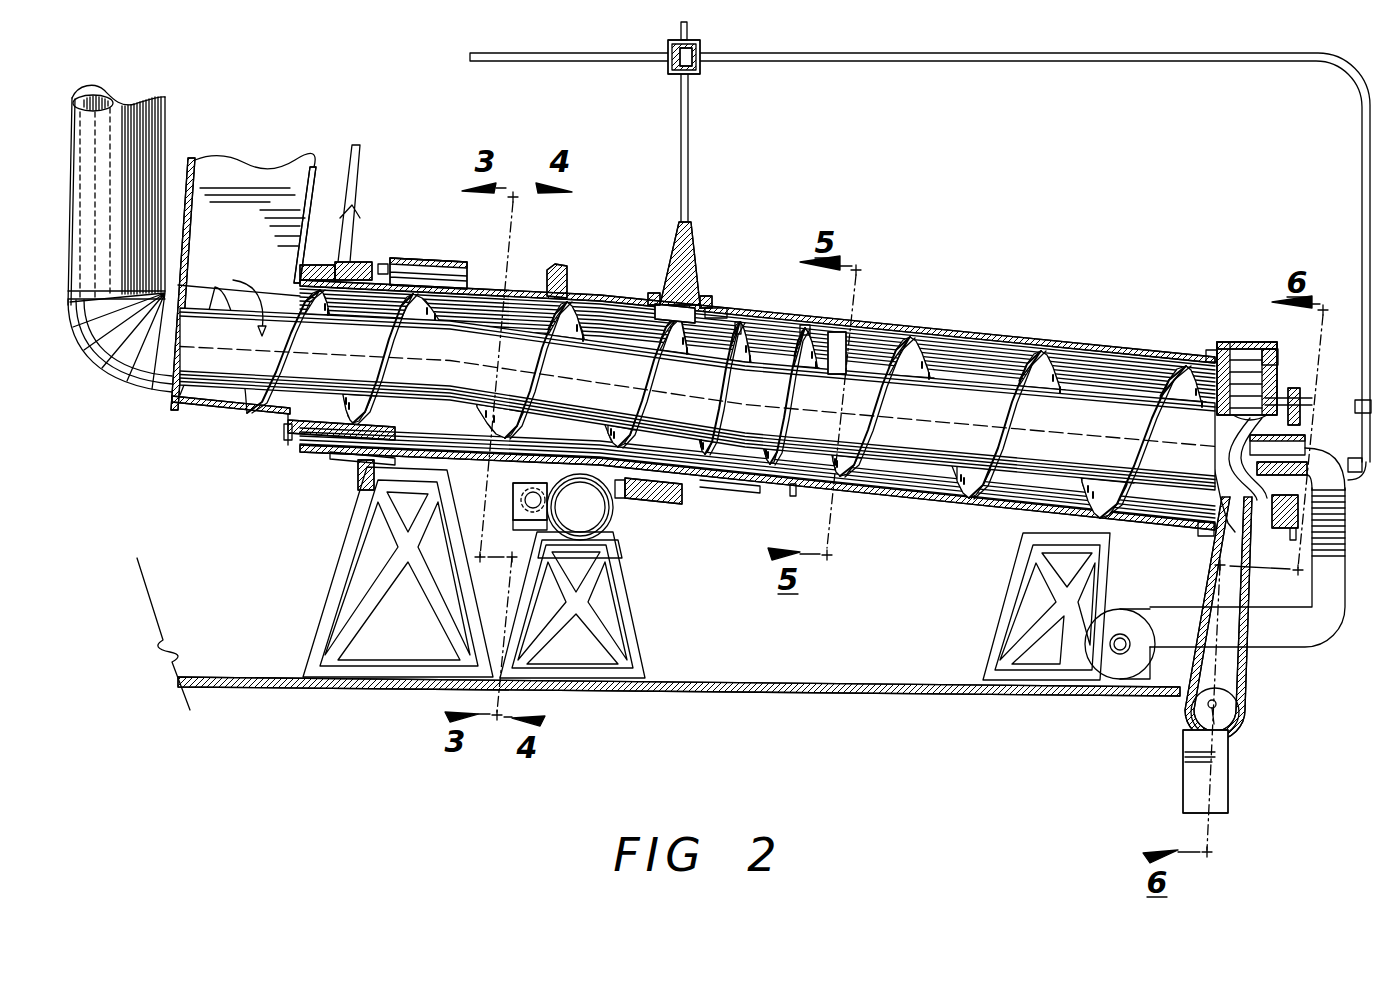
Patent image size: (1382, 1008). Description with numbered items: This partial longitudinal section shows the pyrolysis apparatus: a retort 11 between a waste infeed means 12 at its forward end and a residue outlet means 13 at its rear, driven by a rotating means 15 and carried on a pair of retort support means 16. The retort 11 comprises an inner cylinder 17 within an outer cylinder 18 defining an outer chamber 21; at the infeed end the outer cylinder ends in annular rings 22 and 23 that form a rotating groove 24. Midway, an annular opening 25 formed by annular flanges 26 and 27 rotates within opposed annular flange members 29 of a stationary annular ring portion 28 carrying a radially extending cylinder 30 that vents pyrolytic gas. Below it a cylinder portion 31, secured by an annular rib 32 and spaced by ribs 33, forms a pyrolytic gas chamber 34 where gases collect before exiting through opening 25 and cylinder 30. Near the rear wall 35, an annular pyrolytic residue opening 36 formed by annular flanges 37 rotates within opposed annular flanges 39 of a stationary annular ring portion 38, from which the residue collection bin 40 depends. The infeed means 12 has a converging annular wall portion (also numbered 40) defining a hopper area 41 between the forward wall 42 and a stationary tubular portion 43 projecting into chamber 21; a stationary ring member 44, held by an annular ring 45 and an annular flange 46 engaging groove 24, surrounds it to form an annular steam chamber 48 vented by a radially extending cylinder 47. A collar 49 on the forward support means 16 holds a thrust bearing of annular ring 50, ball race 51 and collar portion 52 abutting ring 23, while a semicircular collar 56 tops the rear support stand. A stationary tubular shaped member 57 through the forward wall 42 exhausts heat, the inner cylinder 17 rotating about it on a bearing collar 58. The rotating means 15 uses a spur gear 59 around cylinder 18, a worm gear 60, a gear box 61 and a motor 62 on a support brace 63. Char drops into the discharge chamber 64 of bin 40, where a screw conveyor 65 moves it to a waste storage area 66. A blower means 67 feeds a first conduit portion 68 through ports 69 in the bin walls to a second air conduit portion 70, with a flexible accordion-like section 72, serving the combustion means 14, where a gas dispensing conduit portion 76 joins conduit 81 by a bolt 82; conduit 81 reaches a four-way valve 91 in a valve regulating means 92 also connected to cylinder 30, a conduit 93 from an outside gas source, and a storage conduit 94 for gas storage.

The retort 11 is at (1000, 342).
The waste infeed means 12 is at (283, 300).
The pyrolytic residue outlet means 13 is at (1196, 600).
The heating or combustion means 14 is at (1309, 442).
The rotating means 15 is at (612, 532).
The retort support means 16 is at (332, 558).
The inner cylinder 17 is at (457, 362).
The outer cylinder 18 is at (630, 304).
The outer chamber 21 is at (757, 388).
The annular ring 22 is at (345, 270).
The annular ring 23 is at (388, 264).
The rotating groove 24 is at (400, 442).
The annular opening 25 is at (663, 319).
The annular flange 26 is at (672, 266).
The annular flange 27 is at (716, 306).
The stationary annular ring portion 28 is at (640, 502).
The opposed annular flange members 29 is at (652, 292).
The radially extending cylinder 30 is at (692, 242).
The cylinder portion 31 is at (722, 481).
The annular rib 32 is at (622, 330).
The ribs 33 is at (741, 325).
The pyrolytic gas chamber 34 is at (808, 346).
The rear wall 35 is at (1278, 380).
The annular pyrolytic residue opening 36 is at (1270, 352).
The annular flanges 37 is at (1222, 342).
The stationary annular ring portion 38 is at (1258, 342).
The opposed annular flanges 39 is at (1206, 356).
The residue collection bin 40 is at (192, 160).
The hopper area 41 is at (222, 227).
The forward wall 42 is at (186, 340).
The stationary tubular portion 43 is at (363, 303).
The stationary ring member 44 is at (312, 235).
The annular ring 45 is at (286, 434).
The annular flange 46 is at (358, 262).
The radially extending cylinder 47 is at (350, 215).
The annular steam chamber 48 is at (292, 286).
The collar 49 is at (468, 282).
The annular ring 50 is at (432, 250).
The ball race 51 is at (420, 258).
The collar portion 52 is at (358, 482).
The collar 56 is at (1015, 521).
The stationary tubular shaped member 57 is at (158, 120).
The bearing collar 58 is at (170, 385).
The spur gear 59 is at (567, 272).
The worm gear 60 is at (522, 494).
The gear box 61 is at (520, 518).
The motor 62 is at (568, 517).
The support brace 63 is at (620, 607).
The discharge chamber 64 is at (1240, 672).
The screw conveyor 65 is at (1222, 712).
The waste storage area 66 is at (1222, 784).
The blower means 67 is at (1128, 686).
The first conduit portion 68 is at (1247, 583).
The ports 69 is at (1230, 644).
The second air conduit portion 70 is at (1312, 617).
The flexible accordion-like section 72 is at (1308, 562).
The gas dispensing conduit portion 76 is at (1328, 457).
The conduit 81 is at (890, 55).
The bolt 82 is at (1357, 403).
The four-way valve 91 is at (672, 50).
The valve regulating means 92 is at (672, 70).
The conduit 93 is at (575, 60).
The storage conduit 94 is at (688, 30).